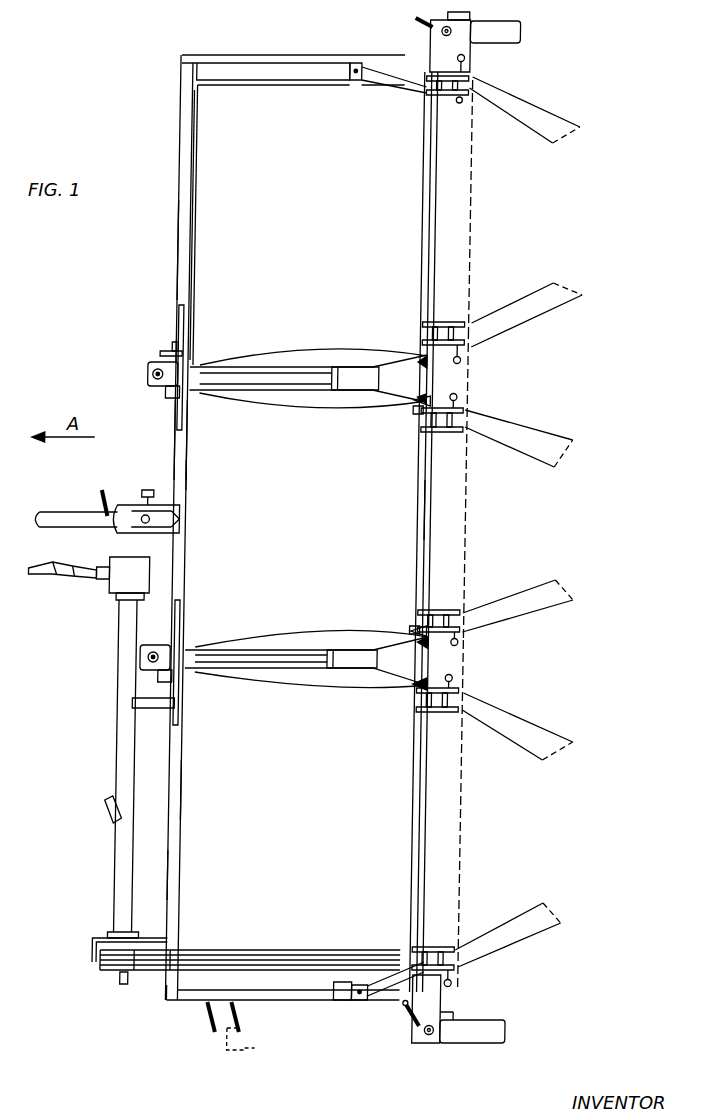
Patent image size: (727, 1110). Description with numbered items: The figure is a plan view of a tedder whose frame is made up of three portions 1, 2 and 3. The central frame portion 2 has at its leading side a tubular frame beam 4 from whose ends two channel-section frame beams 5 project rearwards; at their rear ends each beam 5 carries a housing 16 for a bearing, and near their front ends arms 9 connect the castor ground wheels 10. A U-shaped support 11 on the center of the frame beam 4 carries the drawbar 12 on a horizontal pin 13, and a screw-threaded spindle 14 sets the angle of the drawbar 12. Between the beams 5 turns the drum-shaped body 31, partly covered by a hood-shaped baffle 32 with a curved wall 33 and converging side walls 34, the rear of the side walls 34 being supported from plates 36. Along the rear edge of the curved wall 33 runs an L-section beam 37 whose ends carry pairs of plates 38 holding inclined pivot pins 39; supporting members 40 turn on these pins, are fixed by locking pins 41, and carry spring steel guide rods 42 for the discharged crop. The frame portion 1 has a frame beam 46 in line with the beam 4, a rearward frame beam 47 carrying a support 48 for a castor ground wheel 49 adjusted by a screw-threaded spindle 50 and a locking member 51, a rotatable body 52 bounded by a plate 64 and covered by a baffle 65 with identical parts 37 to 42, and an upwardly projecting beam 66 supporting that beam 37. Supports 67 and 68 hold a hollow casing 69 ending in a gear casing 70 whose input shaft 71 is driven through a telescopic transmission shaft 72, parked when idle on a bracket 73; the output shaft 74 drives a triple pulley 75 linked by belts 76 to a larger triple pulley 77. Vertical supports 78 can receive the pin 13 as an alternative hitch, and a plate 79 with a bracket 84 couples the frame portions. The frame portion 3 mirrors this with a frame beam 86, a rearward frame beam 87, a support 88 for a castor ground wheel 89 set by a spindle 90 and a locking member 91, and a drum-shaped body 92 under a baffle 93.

The frame portion 1 is at (178, 838).
The central frame portion 2 is at (178, 445).
The frame portion 3 is at (180, 128).
The frame beam 4 is at (195, 463).
The frame beam 5 is at (264, 393).
The arm 9 is at (172, 396).
The ground wheel 10 is at (155, 376).
The U-shaped support 11 is at (190, 522).
The drawbar 12 is at (60, 512).
The horizontal pin 13 is at (155, 490).
The screw-threaded spindle 14 is at (108, 490).
The housing 16 is at (384, 669).
The drum-shaped body 31 is at (477, 524).
The hood-shaped baffle 32 is at (190, 478).
The curved wall 33 is at (434, 510).
The side wall 34 is at (326, 402).
The plate 36 is at (431, 512).
The beam 37 is at (425, 186).
The plate 38 is at (456, 58).
The pivot pin 39 is at (428, 414).
The supporting member 40 is at (470, 412).
The locking pin 41 is at (476, 80).
The guide rod 42 is at (542, 132).
The frame beam 46 is at (185, 876).
The frame beam 47 is at (308, 1002).
The support 48 is at (458, 1002).
The castor ground wheel 49 is at (523, 1032).
The screw-threaded spindle 50 is at (420, 1012).
The adjustable locking member 51 is at (446, 1040).
The body 52 is at (470, 838).
The plate 64 is at (428, 682).
The hood-shaped baffle 65 is at (191, 800).
The beam 66 is at (372, 1000).
The support 67 is at (108, 944).
The support 68 is at (144, 708).
The hollow casing 69 is at (128, 744).
The gear casing 70 is at (140, 566).
The input shaft 71 is at (110, 580).
The telescopic transmission shaft 72 is at (58, 583).
The bracket 73 is at (118, 814).
The output shaft 74 is at (138, 988).
The triple pulley 75 is at (112, 976).
The belt 76 is at (164, 974).
The triple pulley 77 is at (352, 1000).
The vertical support 78 is at (236, 1034).
The plate 79 is at (190, 422).
The bracket 84 is at (166, 354).
The frame beam 86 is at (181, 243).
The frame beam 87 is at (286, 66).
The support 88 is at (431, 46).
The castor ground wheel 89 is at (522, 38).
The screw-threaded spindle 90 is at (418, 21).
The adjustable locking member 91 is at (467, 62).
The drum-shaped body 92 is at (477, 208).
The hood-shaped baffle 93 is at (195, 162).